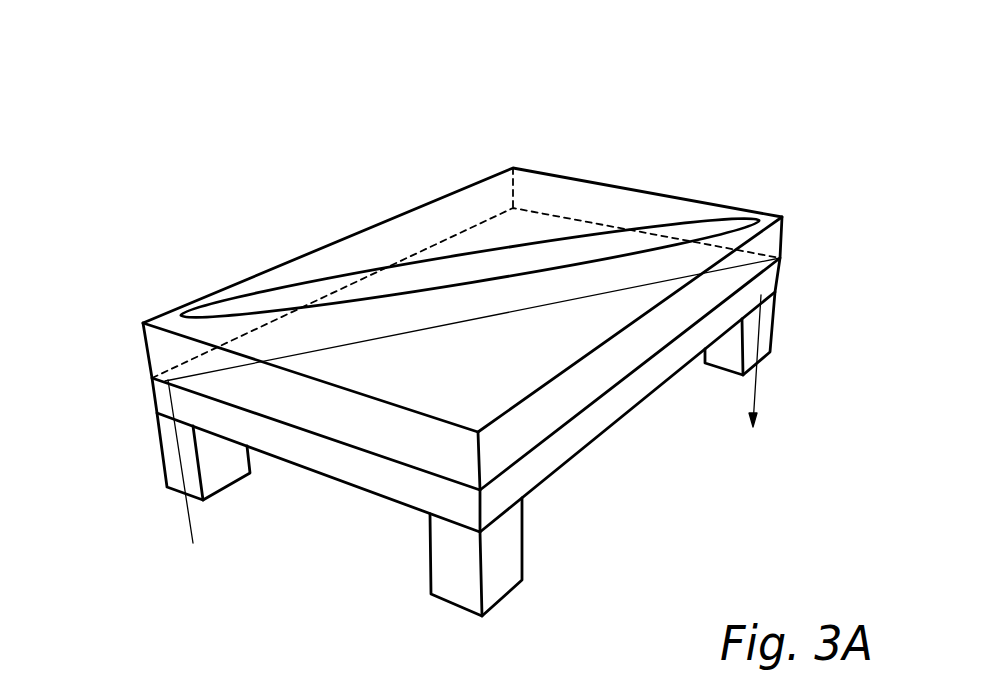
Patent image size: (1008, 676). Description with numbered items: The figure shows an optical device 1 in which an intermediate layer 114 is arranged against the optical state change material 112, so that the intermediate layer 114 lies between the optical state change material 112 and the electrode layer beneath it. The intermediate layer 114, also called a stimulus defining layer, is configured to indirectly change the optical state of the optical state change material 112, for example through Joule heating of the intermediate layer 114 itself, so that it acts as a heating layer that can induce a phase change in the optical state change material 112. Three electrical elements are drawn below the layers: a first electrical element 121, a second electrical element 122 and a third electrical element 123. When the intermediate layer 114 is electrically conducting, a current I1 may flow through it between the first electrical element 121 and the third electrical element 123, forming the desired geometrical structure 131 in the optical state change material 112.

The optical assembly 1 is at (691, 114).
The optical state change material 112 is at (145, 348).
The intermediate layer 114 is at (162, 395).
The geometrical structure 131 is at (445, 258).
The first electrical element 121 is at (217, 462).
The second electrical element 122 is at (497, 555).
The third electrical element 123 is at (728, 347).
The current I1 is at (758, 383).